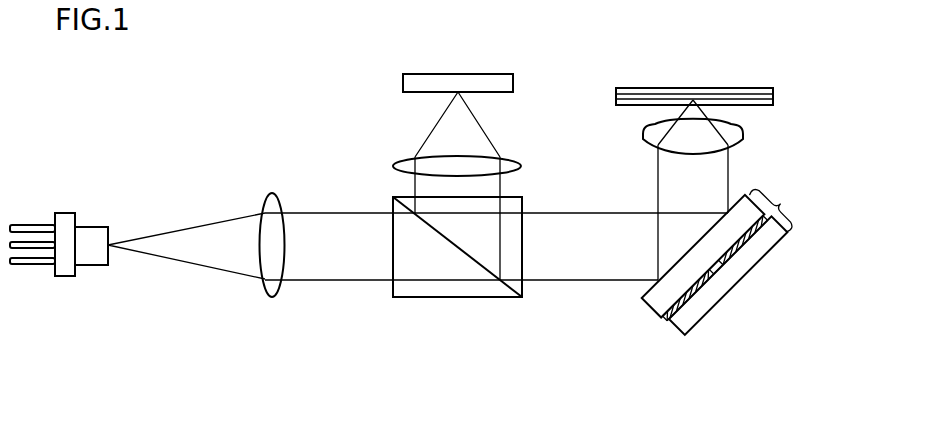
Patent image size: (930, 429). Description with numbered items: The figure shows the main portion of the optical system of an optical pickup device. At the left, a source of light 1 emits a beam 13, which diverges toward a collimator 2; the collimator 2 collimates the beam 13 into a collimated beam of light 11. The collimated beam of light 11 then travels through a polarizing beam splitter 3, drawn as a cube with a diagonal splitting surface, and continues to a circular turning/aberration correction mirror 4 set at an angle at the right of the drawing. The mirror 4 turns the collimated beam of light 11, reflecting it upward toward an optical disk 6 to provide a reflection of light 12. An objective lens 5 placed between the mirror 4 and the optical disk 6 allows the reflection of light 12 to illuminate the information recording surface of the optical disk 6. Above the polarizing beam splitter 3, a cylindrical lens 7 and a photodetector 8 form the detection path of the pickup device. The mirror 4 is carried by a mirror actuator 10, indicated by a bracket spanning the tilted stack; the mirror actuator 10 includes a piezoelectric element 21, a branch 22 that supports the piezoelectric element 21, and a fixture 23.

The source of light 1 is at (92, 258).
The collimator 2 is at (272, 287).
The polarizing beam splitter 3 is at (456, 298).
The turning/aberration correction mirror 4 is at (655, 298).
The objective lens 5 is at (737, 133).
The optical disk 6 is at (773, 95).
The cylindrical lens 7 is at (400, 168).
The photodetector 8 is at (412, 83).
The mirror actuator 10 is at (775, 205).
The collimated beam of light 11 is at (580, 213).
The reflection of light 12 is at (728, 167).
The beam 13 is at (207, 223).
The piezoelectric element 21 is at (662, 317).
The branch 22 is at (718, 270).
The fixture 23 is at (763, 245).